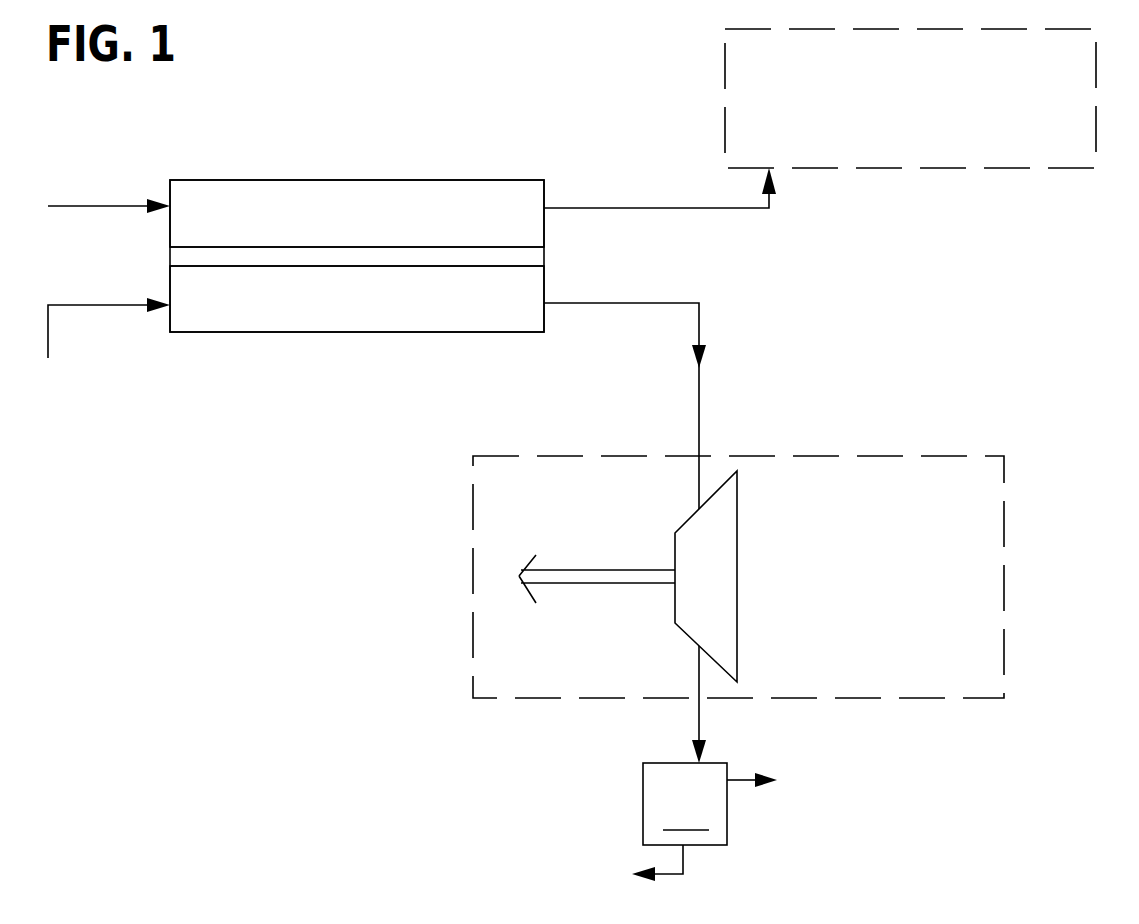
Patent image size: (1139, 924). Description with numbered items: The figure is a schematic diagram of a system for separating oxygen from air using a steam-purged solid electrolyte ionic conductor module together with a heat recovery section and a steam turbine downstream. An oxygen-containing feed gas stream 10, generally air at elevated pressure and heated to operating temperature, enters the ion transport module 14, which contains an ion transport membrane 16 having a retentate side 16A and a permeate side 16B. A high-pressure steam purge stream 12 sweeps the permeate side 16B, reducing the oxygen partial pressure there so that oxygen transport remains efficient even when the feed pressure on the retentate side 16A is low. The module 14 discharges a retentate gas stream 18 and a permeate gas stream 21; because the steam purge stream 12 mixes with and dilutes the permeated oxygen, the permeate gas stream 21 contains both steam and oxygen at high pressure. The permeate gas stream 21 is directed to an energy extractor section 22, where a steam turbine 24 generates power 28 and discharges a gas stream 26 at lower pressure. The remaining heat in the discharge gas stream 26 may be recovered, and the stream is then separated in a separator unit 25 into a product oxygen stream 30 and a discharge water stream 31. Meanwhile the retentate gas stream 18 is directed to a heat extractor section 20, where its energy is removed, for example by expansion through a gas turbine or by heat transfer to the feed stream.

The oxygen-containing feed gas stream 10 is at (97, 206).
The high-pressure steam purge stream 12 is at (48, 340).
The ion transport module 14 is at (300, 180).
The ion transport membrane 16 is at (544, 257).
The retentate side 16A is at (360, 247).
The permeate side 16B is at (360, 266).
The retentate gas stream 18 is at (750, 208).
The heat extractor section 20 is at (725, 101).
The permeate gas stream 21 is at (700, 318).
The energy extractor section 22 is at (866, 456).
The steam turbine 24 is at (737, 575).
The heat exchanger 25 is at (685, 804).
The discharge gas stream 26 is at (699, 676).
The power 28 is at (578, 583).
The product oxygen stream 30 is at (772, 780).
The discharge water stream 31 is at (636, 868).